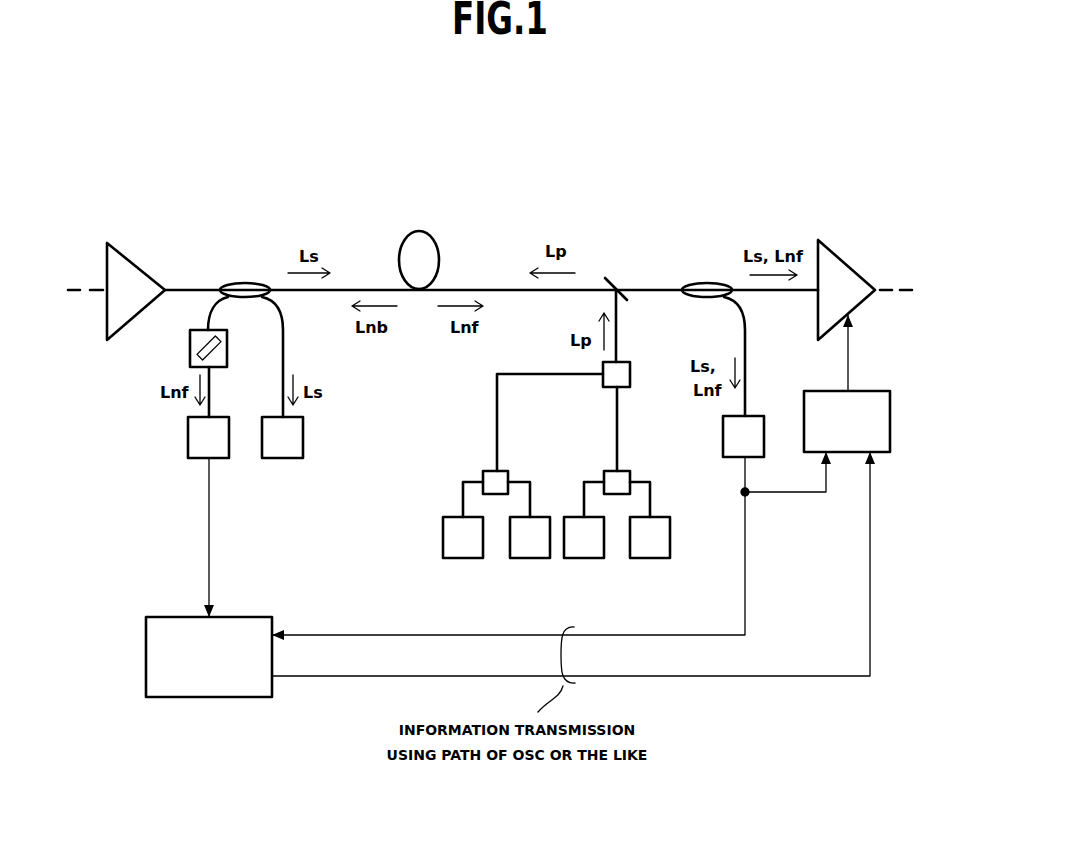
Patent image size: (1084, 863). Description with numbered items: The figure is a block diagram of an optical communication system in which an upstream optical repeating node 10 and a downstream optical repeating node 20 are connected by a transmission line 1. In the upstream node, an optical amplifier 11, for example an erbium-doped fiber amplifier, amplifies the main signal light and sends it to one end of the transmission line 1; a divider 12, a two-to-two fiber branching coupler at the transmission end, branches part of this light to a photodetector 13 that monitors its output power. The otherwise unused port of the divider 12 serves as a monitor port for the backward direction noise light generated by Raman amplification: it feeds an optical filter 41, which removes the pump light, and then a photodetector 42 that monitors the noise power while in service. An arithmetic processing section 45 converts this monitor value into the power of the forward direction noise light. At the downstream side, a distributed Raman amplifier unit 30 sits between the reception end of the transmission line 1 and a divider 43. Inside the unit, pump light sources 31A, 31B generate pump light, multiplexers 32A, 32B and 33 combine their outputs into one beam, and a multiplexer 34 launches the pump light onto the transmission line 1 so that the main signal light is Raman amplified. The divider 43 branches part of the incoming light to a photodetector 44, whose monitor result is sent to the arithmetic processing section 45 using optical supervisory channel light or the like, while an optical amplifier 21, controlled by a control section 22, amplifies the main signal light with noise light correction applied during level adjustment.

The transmission line 1 is at (417, 230).
The optical repeating node 10 is at (170, 170).
The optical amplifier 11 is at (130, 260).
The divider 12 is at (243, 283).
The photodetector 13 is at (303, 436).
The optical repeating node 20 is at (822, 170).
The optical amplifier 21 is at (846, 258).
The control section 22 is at (866, 391).
The distributed Raman amplifier unit 30 is at (690, 572).
The pump light source 31A is at (593, 558).
The pump light source 31B is at (472, 558).
The multiplexer 32A is at (606, 471).
The multiplexer 32B is at (485, 471).
The multiplexer 33 is at (624, 362).
The multiplexer 34 is at (616, 277).
The optical filter 41 is at (190, 350).
The photodetector 42 is at (188, 436).
The divider 43 is at (707, 283).
The photodetector 44 is at (723, 427).
The arithmetic processing section 45 is at (180, 617).